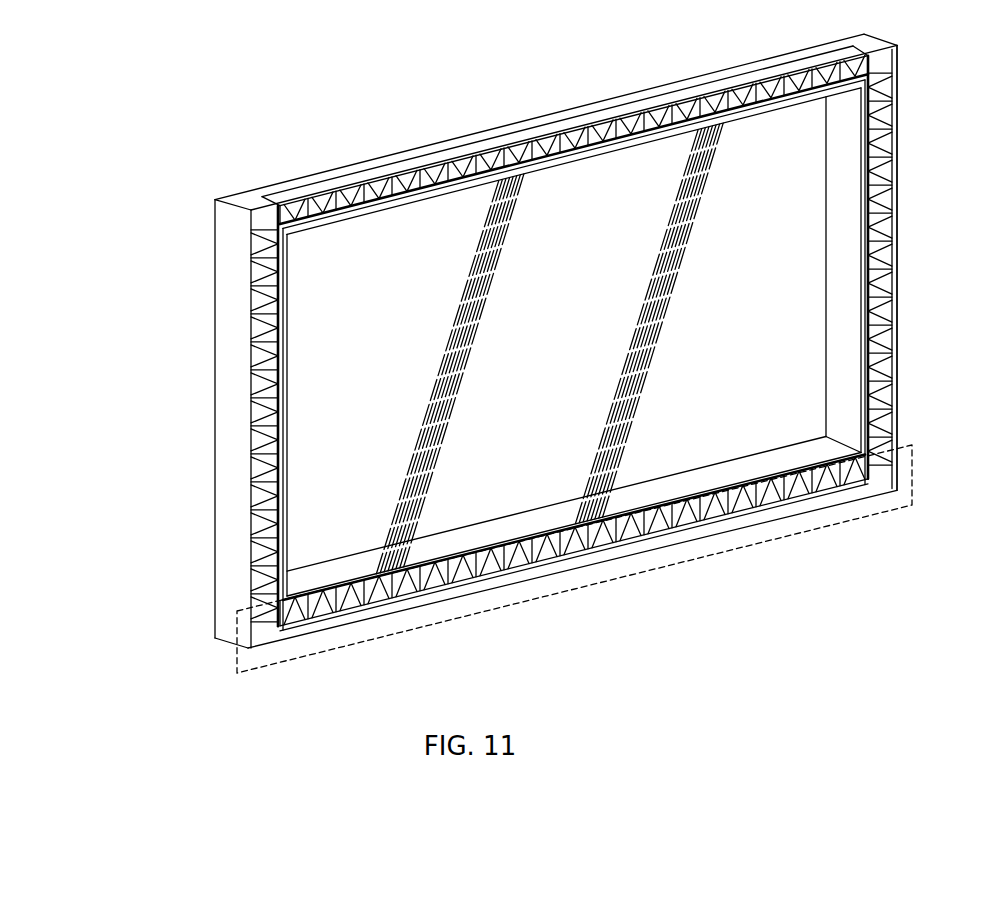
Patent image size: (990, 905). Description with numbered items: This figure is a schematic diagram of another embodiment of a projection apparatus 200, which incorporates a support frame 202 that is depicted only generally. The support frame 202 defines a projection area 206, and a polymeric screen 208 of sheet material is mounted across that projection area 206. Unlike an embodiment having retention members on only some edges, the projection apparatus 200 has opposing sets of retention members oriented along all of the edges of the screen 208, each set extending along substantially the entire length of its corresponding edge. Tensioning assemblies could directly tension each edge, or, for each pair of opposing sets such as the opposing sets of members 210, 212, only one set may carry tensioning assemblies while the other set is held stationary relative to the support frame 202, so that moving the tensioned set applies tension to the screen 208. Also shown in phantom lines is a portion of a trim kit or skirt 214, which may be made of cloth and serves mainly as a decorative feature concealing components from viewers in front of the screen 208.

The projection apparatus 200 is at (328, 125).
The support frame 202 is at (733, 78).
The projection area 206 is at (792, 264).
The polymeric screen 208 is at (718, 417).
The set of retention members 210 is at (236, 432).
The set of retention members 212 is at (920, 300).
The skirt 214 is at (678, 556).